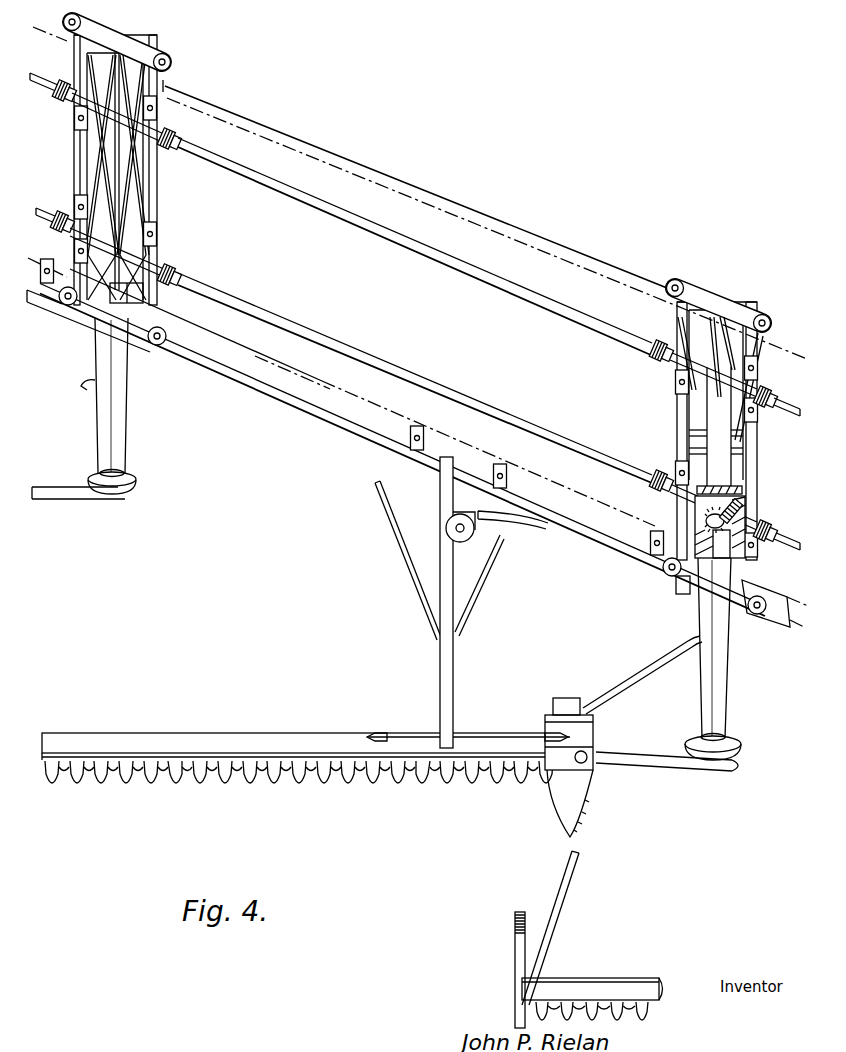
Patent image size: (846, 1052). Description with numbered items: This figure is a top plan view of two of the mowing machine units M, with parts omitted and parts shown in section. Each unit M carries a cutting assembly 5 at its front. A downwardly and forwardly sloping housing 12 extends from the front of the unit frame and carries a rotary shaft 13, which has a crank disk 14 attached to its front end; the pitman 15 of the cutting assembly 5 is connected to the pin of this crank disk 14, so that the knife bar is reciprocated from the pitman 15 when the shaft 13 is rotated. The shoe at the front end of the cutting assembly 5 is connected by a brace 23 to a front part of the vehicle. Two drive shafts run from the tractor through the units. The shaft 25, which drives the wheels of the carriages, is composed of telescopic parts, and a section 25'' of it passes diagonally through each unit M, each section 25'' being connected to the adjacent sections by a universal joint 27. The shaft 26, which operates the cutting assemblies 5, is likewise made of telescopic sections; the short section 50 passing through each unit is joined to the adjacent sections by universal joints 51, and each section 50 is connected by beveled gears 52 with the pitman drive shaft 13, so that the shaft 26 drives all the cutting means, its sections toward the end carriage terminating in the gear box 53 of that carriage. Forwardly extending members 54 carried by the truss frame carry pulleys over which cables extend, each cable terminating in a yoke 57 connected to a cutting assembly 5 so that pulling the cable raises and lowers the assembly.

The mowing machine unit M is at (122, 33).
The cutting assembly 5 is at (291, 735).
The housing 12 is at (727, 690).
The rotary shaft 13 is at (687, 578).
The crank disk 14 is at (742, 745).
The pitman 15 is at (673, 762).
The brace 23 is at (633, 680).
The shaft 25 is at (415, 244).
The section of the shaft 25'' is at (759, 332).
The shaft 26 is at (572, 440).
The universal joint 27 is at (673, 366).
The section 50 is at (672, 505).
The universal joint 51 is at (762, 535).
The beveled gears 52 is at (742, 492).
The gear box 53 is at (710, 487).
The forwardly extending member 54 is at (455, 668).
The yoke 57 is at (516, 735).